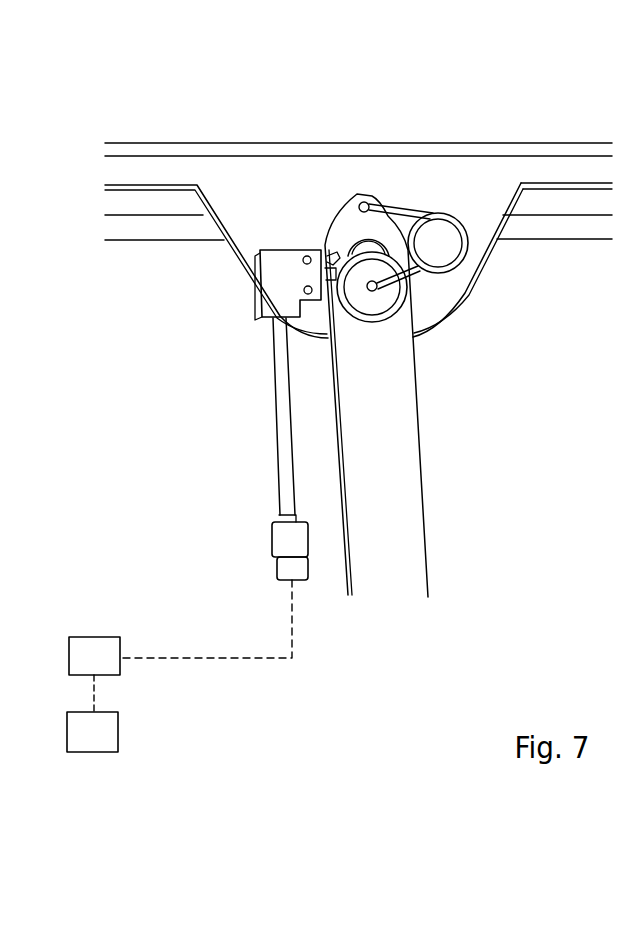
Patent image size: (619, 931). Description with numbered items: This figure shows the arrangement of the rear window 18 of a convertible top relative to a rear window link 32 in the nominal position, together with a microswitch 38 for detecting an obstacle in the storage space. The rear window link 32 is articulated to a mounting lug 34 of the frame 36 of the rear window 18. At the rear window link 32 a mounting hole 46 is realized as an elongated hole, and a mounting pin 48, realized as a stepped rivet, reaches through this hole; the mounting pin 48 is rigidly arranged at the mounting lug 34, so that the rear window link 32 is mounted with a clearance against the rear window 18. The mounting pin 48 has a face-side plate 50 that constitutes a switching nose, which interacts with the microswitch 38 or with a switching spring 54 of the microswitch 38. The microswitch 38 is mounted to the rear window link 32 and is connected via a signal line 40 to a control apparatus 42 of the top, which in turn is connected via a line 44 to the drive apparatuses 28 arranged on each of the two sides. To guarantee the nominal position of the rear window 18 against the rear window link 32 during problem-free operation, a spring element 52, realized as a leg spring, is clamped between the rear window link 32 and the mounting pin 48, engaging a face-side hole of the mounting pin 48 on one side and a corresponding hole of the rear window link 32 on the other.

The rear window 18 is at (128, 134).
The drive apparatus 28 is at (92, 732).
The rear window link 32 is at (383, 497).
The mounting lug 34 is at (452, 287).
The frame 36 is at (498, 172).
The microswitch 38 is at (277, 285).
The signal line 40 is at (293, 618).
The control apparatus 42 is at (180, 627).
The line 44 is at (94, 688).
The mounting hole 46 is at (363, 242).
The mounting pin 48 is at (426, 327).
The face-side plate 50 is at (382, 297).
The spring element 52 is at (435, 213).
The switching spring 54 is at (340, 245).